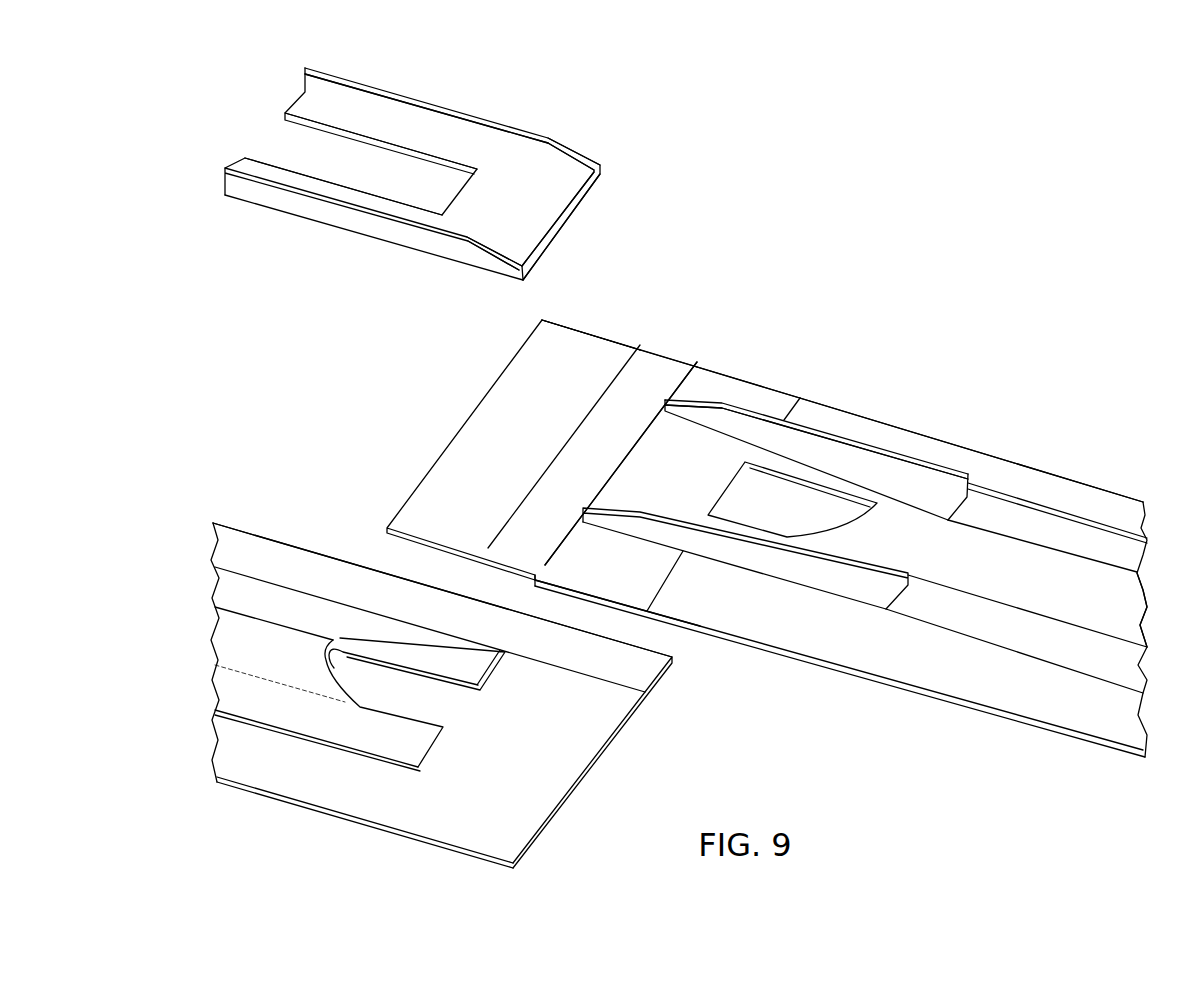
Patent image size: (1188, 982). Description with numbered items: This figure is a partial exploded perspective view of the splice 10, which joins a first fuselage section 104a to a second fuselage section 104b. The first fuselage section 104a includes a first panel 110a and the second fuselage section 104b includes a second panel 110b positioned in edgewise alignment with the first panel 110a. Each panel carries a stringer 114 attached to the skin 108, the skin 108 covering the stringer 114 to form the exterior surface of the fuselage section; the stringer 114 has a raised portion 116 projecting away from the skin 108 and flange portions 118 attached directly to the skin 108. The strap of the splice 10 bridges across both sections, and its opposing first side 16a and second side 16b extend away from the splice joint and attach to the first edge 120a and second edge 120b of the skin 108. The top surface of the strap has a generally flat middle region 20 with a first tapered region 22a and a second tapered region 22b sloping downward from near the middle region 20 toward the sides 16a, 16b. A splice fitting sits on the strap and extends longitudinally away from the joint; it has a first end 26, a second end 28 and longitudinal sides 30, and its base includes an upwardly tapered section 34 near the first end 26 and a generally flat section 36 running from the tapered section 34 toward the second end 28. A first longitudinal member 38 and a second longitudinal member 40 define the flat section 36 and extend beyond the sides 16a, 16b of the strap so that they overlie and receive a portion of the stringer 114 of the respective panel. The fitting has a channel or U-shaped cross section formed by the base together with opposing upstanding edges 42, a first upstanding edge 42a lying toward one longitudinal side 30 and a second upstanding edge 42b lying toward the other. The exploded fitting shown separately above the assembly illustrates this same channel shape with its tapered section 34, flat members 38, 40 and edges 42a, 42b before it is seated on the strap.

The splice 10 is at (933, 225).
The first side 16a is at (803, 412).
The second side 16b is at (472, 413).
The middle region 20 is at (663, 358).
The first tapered region 22a is at (747, 383).
The second tapered region 22b is at (587, 342).
The first end 26 is at (567, 218).
The second end 28 is at (293, 98).
The longitudinal sides 30 is at (417, 115).
The upwardly tapered section 34 is at (503, 278).
The flat section 36 is at (323, 230).
The first longitudinal member 38 is at (322, 107).
The second longitudinal member 40 is at (267, 170).
The upstanding edges 42 is at (888, 462).
The first upstanding edge 42a is at (470, 127).
The second upstanding edge 42b is at (222, 186).
The first fuselage section 104a is at (1083, 452).
The second fuselage section 104b is at (262, 520).
The skin 108 is at (837, 656).
The first panel 110a is at (1117, 502).
The second panel 110b is at (313, 793).
The stringer 114 is at (1132, 602).
The raised portion 116 is at (1023, 573).
The flange portions 118 is at (913, 612).
The first edge 120a is at (533, 577).
The second edge 120b is at (583, 782).